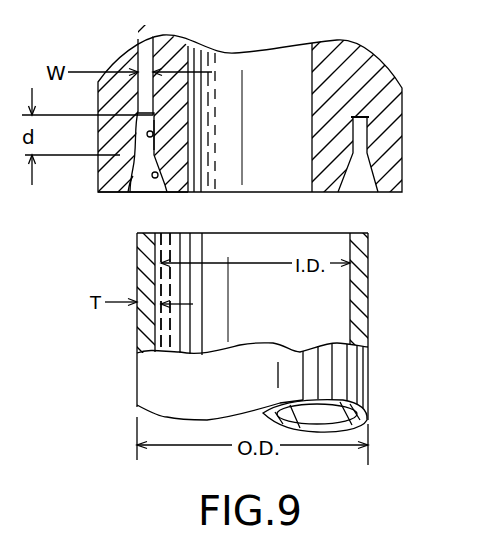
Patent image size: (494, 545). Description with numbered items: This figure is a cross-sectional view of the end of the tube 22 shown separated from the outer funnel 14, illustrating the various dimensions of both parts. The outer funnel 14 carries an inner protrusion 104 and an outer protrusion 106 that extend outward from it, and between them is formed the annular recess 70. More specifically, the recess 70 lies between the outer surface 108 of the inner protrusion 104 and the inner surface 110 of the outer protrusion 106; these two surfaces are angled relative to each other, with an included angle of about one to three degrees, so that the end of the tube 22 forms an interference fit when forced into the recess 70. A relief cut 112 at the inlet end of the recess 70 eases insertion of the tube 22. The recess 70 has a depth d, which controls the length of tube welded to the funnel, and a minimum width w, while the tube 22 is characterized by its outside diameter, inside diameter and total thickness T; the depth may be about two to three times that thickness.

The outer funnel 14 is at (406, 148).
The tube 22 is at (372, 380).
The annular recess 70 is at (140, 112).
The inner protrusion 104 is at (182, 193).
The outer protrusion 106 is at (115, 183).
The outer surface of the inner protrusion 108 is at (146, 125).
The inner surface of the outer protrusion 110 is at (152, 121).
The relief cut 112 is at (160, 168).